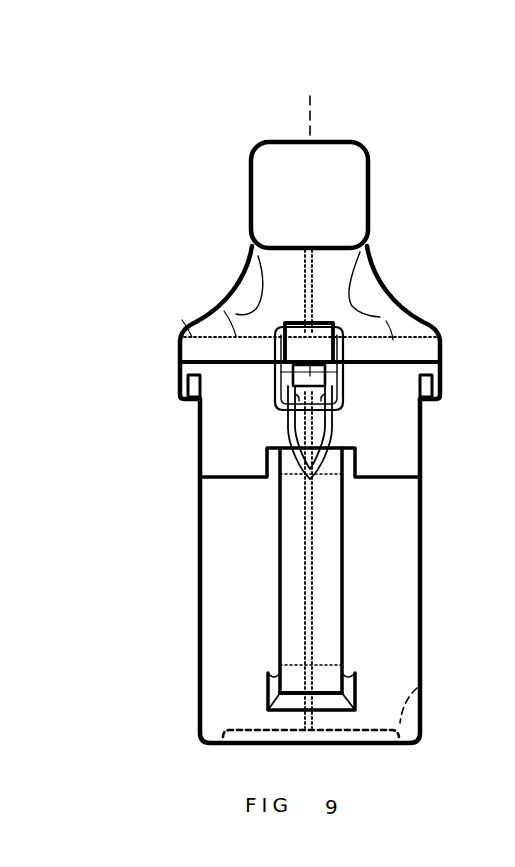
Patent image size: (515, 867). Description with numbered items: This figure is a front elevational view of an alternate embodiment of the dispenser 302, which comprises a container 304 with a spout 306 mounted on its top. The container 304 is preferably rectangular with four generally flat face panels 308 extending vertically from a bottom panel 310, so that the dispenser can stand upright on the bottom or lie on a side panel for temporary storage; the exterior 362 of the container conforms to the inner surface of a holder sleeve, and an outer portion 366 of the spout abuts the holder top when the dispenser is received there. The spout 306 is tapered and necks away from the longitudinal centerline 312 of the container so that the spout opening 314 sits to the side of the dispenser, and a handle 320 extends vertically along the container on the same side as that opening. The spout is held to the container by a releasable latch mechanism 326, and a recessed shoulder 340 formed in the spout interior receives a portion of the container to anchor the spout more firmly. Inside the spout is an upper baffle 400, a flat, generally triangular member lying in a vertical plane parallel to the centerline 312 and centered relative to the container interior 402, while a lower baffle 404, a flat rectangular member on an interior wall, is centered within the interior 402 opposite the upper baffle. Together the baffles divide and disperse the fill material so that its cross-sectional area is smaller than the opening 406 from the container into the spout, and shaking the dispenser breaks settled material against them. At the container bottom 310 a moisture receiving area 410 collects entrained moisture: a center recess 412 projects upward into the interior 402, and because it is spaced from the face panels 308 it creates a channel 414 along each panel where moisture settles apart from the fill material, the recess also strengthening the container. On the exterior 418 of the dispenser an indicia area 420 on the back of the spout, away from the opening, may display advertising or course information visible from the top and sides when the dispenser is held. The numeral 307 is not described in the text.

The dispenser 302 is at (150, 246).
The container 304 is at (200, 546).
The spout 306 is at (248, 198).
The bottom support 307 is at (202, 672).
The face panels 308 is at (421, 626).
The bottom panel 310 is at (207, 744).
The longitudinal centerline 312 is at (310, 768).
The spout opening 314 is at (348, 172).
The handle 320 is at (292, 624).
The latch mechanism 326 is at (356, 411).
The recessed shoulder 340 is at (178, 315).
The exterior of the container 362 is at (168, 485).
The outer portion of the spout 366 is at (181, 388).
The upper baffle 400 is at (315, 283).
The container interior 402 is at (375, 550).
The lower baffle 404 is at (300, 592).
The opening from the container into the spout 406 is at (420, 311).
The moisture receiving area 410 is at (412, 725).
The center recess 412 is at (362, 750).
The channel 414 is at (427, 683).
The exterior of the dispenser 418 is at (404, 270).
The indicia area 420 is at (240, 291).